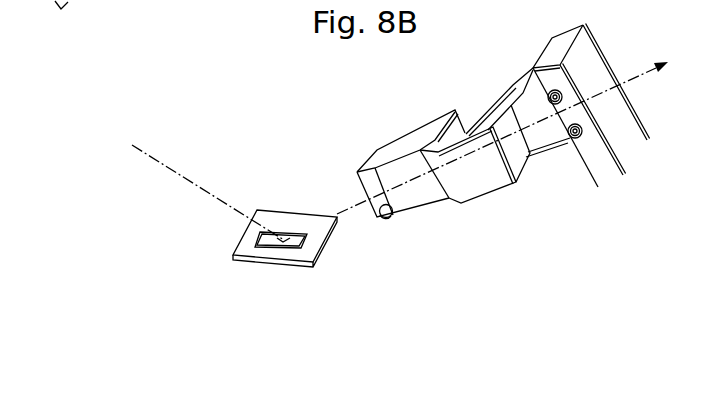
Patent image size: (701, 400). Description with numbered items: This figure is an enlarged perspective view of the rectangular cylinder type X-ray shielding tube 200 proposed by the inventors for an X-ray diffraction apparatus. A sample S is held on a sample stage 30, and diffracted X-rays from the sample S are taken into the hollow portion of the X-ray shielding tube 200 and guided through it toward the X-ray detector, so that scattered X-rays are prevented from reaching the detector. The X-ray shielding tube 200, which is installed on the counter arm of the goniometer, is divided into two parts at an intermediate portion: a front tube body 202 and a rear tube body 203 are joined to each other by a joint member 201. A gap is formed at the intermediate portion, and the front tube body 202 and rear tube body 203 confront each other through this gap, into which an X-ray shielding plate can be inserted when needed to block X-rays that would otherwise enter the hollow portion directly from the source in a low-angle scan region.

The sample stage 30 is at (327, 247).
The sample S is at (258, 231).
The X-ray shielding tube 200 is at (503, 150).
The joint member 201 is at (474, 190).
The front tube body 202 is at (400, 148).
The rear tube body 203 is at (531, 77).